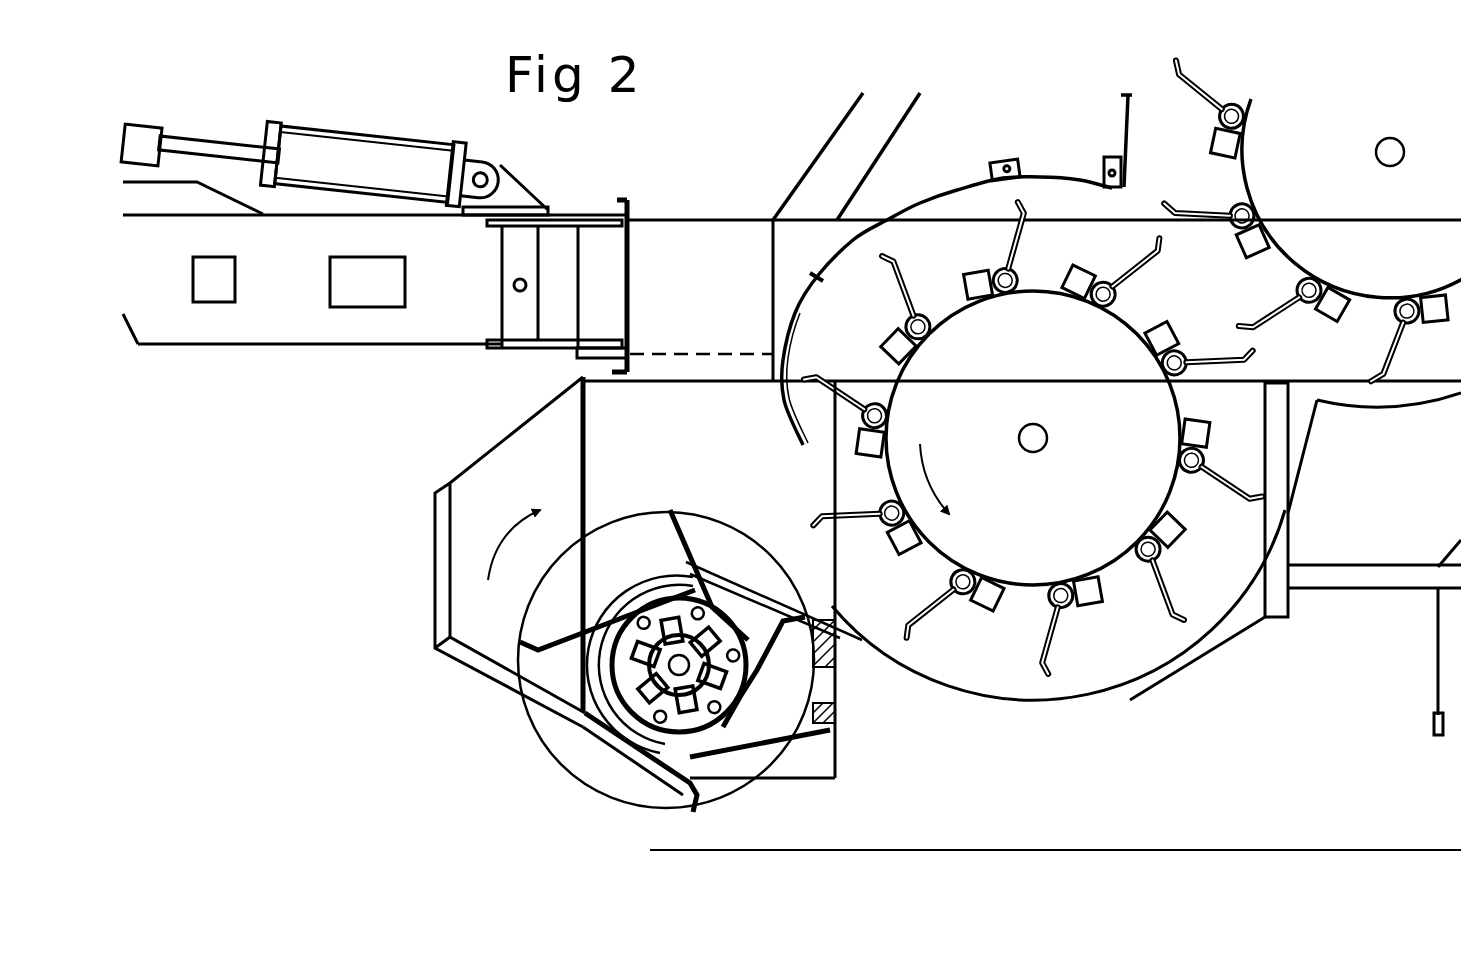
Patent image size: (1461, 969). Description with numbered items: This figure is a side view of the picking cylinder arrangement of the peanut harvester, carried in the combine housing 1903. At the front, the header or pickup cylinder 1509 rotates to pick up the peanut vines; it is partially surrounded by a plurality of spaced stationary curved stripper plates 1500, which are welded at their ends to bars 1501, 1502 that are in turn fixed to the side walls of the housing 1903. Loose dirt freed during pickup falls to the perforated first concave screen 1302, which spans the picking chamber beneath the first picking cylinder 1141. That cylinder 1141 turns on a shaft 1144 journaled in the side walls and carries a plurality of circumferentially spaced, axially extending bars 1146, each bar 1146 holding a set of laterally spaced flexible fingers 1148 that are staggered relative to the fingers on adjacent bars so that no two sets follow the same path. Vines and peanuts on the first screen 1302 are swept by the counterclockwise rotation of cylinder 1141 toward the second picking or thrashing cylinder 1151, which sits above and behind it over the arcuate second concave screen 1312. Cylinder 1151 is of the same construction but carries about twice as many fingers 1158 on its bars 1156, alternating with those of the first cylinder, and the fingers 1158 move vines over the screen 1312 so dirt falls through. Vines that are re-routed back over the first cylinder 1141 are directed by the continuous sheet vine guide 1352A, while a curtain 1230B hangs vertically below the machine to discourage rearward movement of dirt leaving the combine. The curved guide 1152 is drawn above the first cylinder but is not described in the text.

The first picking cylinder 1141 is at (1033, 437).
The shaft 1144 is at (1042, 427).
The bar 1146 is at (892, 363).
The flexible fingers 1148 is at (897, 280).
The second picking cylinder 1151 is at (1350, 240).
The curved guide 1152 is at (910, 213).
The bars 1156 is at (1220, 150).
The fingers 1158 is at (1200, 98).
The first concave screen 1302 is at (1110, 690).
The second concave screen 1312 is at (1413, 418).
The curtain 1230B is at (1428, 660).
The vine guide 1352A is at (782, 419).
The stripper plate 1500 is at (613, 597).
The bar 1501 is at (840, 688).
The bar 1502 is at (838, 735).
The header cylinder 1509 is at (543, 756).
The combine housing 1903 is at (650, 472).